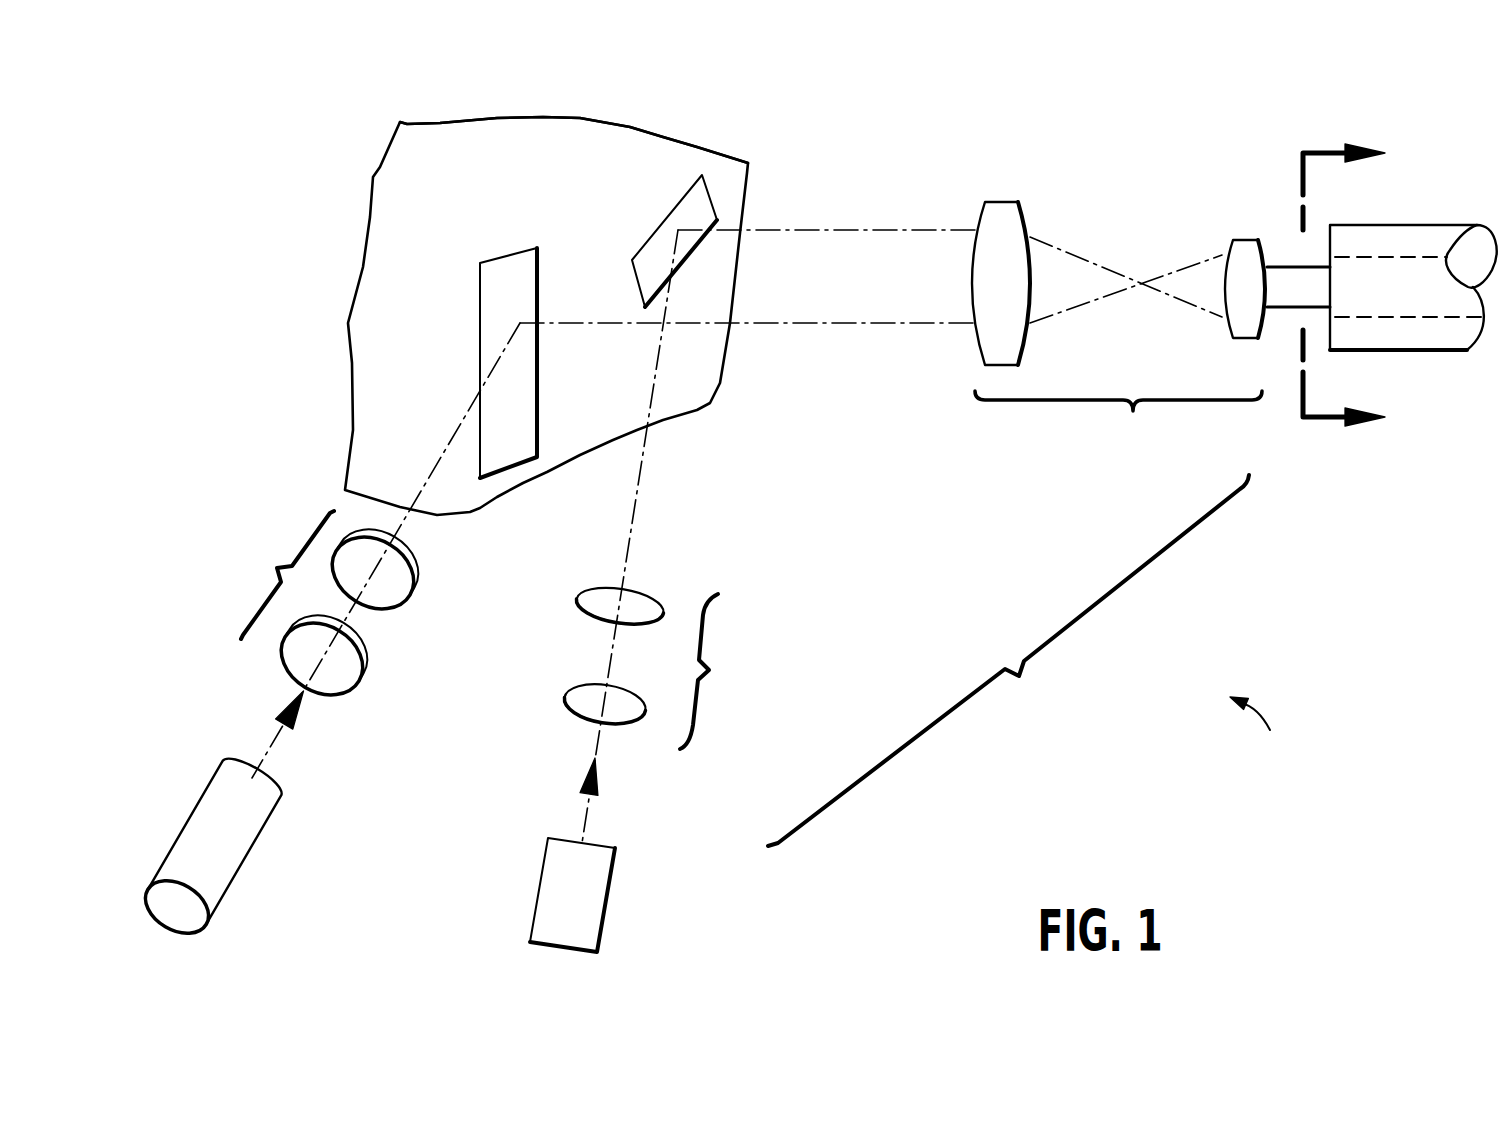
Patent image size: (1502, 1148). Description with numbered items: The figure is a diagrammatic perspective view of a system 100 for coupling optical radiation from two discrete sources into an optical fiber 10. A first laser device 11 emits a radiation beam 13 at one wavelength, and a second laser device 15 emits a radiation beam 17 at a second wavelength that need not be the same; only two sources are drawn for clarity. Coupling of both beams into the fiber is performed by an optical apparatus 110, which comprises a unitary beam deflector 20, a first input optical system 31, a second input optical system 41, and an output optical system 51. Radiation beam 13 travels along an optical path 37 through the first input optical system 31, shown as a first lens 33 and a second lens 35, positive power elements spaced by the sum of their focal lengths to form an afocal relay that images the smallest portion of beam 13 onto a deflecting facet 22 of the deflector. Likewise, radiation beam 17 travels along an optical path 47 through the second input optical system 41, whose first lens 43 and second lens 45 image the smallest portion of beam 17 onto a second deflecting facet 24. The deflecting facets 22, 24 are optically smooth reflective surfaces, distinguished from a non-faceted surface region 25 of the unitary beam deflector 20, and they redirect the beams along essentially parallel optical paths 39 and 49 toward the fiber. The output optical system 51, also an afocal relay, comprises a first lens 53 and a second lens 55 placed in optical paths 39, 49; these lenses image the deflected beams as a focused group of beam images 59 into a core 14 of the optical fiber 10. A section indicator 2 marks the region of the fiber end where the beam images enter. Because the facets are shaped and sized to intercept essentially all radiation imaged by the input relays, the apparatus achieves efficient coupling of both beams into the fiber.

The section line 2- 2 is at (1353, 285).
The optical fiber 10 is at (1378, 350).
The laser device 11 is at (270, 815).
The radiation beam 13 is at (294, 718).
The core 14 is at (1384, 256).
The laser device 15 is at (541, 884).
The radiation beam 17 is at (584, 776).
The unitary beam deflector 20 is at (348, 325).
The deflecting facet 22 is at (527, 428).
The deflecting facet 24 is at (700, 210).
The non-faceted surface region 25 is at (647, 145).
The first input optical system 31 is at (287, 575).
The first lens 33 is at (367, 663).
The second lens 35 is at (415, 592).
The optical path 37 is at (407, 513).
The optical path 39 is at (772, 323).
The second input optical system 41 is at (718, 671).
The first lens 43 is at (565, 700).
The second lens 45 is at (577, 602).
The optical path 47 is at (630, 548).
The optical path 49 is at (838, 230).
The output optical system 51 is at (1118, 341).
The first lens 53 is at (1000, 201).
The second lens 55 is at (1243, 238).
The focused group of beam images 59 is at (1285, 310).
The system 100 is at (1277, 722).
The optical apparatus 110 is at (1008, 660).